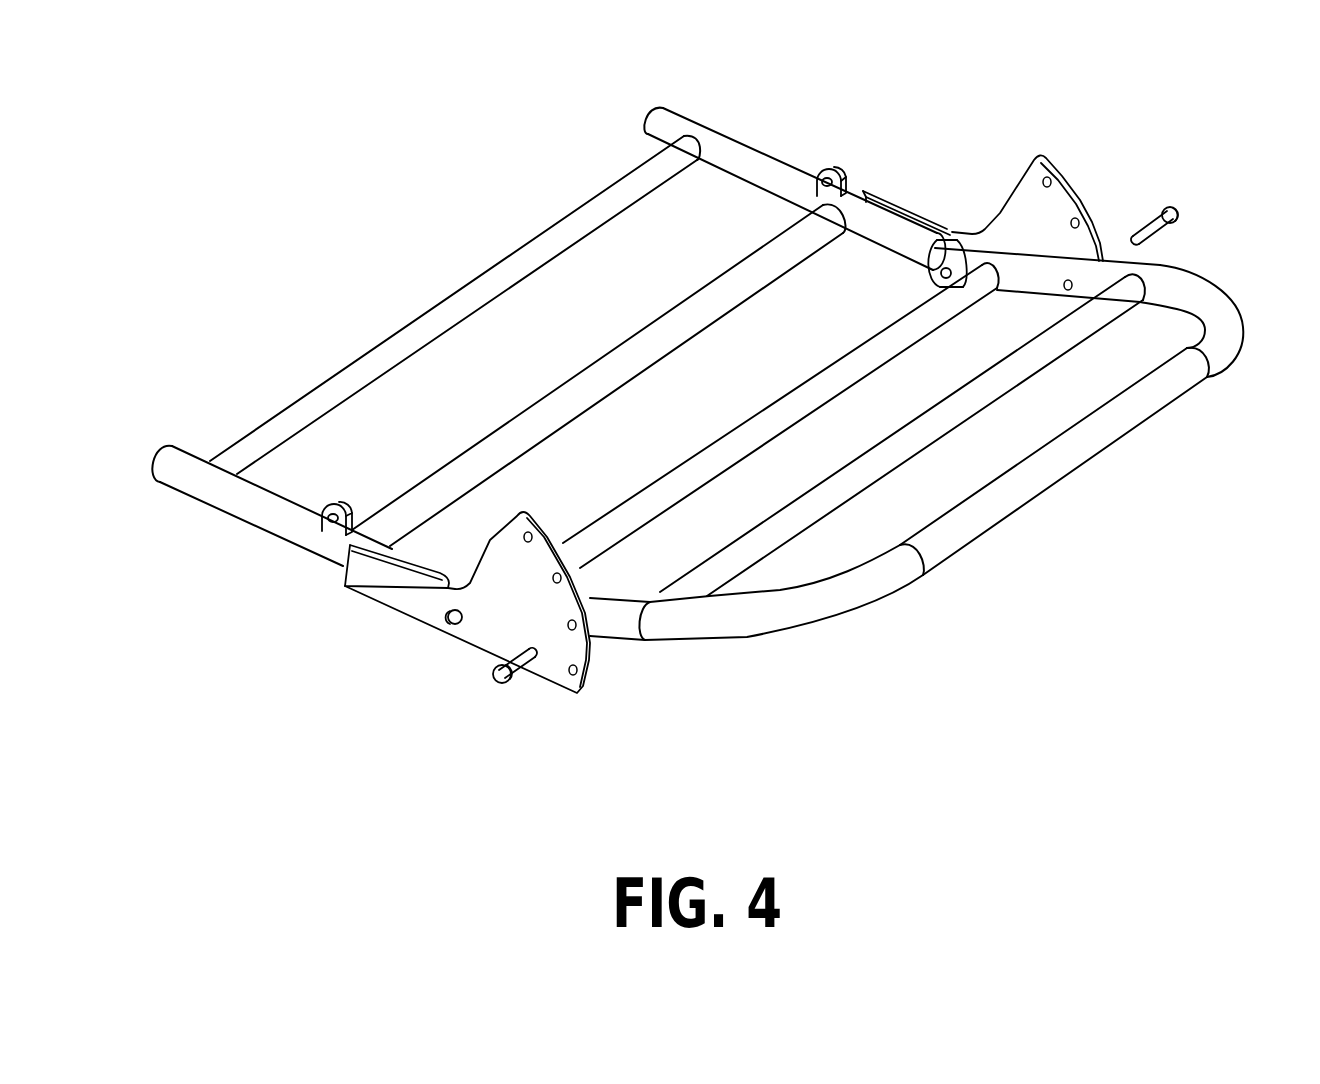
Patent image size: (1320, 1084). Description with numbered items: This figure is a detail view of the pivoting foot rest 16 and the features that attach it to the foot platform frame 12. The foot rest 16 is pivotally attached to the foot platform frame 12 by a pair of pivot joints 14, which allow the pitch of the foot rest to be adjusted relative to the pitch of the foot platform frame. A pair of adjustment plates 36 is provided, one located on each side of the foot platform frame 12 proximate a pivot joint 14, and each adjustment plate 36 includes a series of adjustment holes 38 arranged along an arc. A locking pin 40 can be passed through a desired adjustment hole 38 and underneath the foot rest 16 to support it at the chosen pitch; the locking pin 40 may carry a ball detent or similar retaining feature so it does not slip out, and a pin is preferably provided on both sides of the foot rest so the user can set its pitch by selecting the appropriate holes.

The foot platform frame 12 is at (260, 510).
The pivot joint 14 is at (950, 270).
The foot rest 16 is at (947, 537).
The adjustment plate 36 is at (577, 645).
The adjustment holes 38 is at (532, 530).
The locking pin 40 is at (1157, 207).